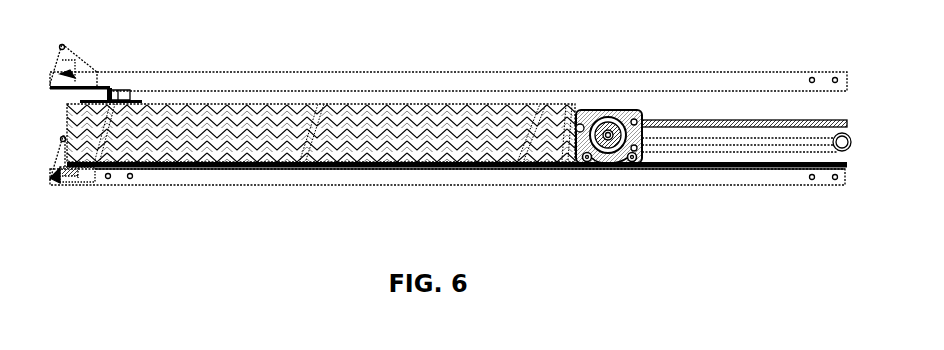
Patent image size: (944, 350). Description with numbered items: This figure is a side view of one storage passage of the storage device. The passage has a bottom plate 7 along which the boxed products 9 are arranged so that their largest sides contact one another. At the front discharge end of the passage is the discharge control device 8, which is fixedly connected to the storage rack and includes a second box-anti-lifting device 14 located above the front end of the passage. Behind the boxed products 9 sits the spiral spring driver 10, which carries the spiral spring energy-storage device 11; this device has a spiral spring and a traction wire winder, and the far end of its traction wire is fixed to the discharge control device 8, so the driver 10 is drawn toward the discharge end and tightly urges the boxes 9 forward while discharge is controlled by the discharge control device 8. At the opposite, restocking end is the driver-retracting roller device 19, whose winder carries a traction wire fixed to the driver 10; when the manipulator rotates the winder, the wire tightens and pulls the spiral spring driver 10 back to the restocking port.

The bottom plate 7 is at (468, 171).
The discharge control device 8 is at (63, 183).
The boxed products 9 is at (305, 120).
The spiral spring driver 10 is at (614, 110).
The spiral spring energy-storage device 11 is at (613, 164).
The second box-anti-lifting device 14 is at (117, 96).
The driver-retracting roller device 19 is at (848, 150).